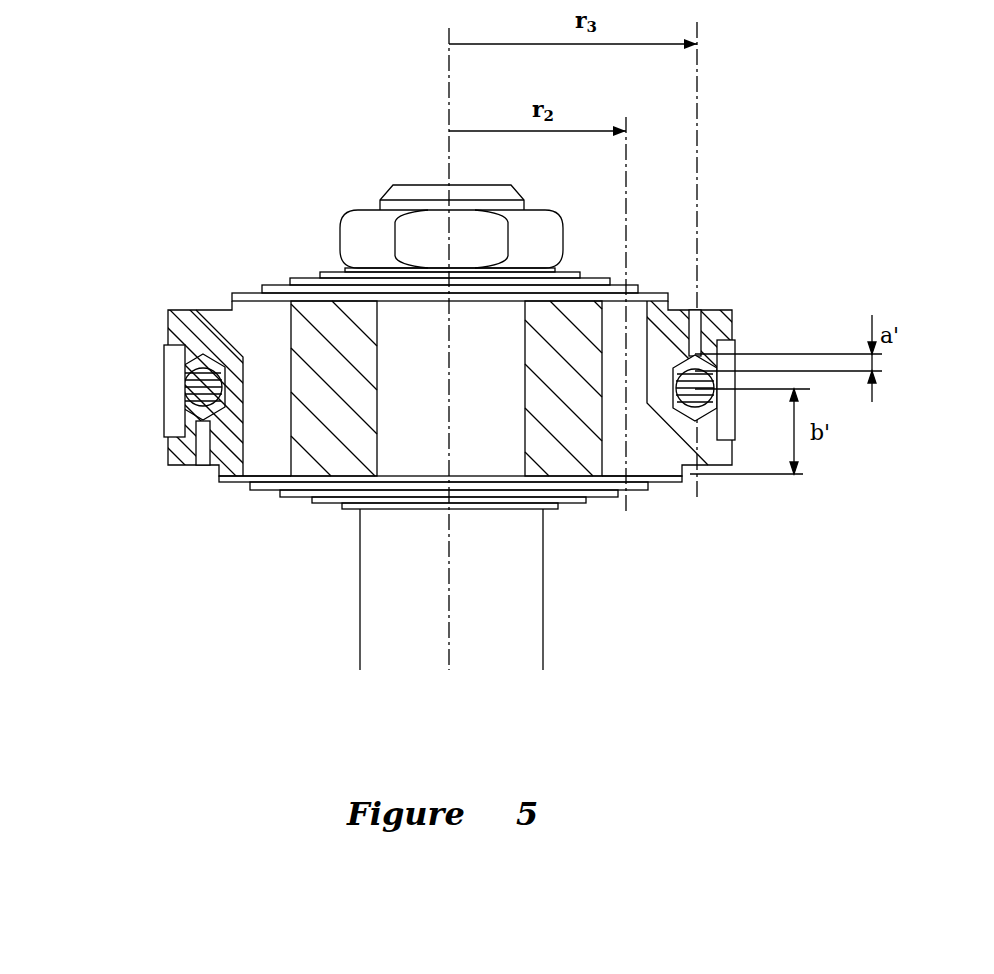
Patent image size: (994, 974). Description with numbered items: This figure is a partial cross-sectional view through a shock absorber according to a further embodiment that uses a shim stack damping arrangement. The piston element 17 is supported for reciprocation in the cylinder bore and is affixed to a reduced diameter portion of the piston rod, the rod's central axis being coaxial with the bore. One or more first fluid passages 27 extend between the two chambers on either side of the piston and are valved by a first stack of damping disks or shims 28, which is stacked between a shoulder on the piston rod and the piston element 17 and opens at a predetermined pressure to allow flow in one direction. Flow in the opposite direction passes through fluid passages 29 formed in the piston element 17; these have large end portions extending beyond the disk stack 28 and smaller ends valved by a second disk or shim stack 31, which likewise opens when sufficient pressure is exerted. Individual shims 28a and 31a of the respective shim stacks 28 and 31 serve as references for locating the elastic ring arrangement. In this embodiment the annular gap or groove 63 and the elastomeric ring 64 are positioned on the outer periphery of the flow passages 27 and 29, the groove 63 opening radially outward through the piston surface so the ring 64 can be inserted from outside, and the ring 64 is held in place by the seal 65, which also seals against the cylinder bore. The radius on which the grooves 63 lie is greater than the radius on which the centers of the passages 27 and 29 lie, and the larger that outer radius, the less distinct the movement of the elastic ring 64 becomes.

The piston element 17 is at (715, 325).
The first fluid passages 27 is at (238, 323).
The first stack of damping disks or shims 28 is at (301, 494).
The shims 28a is at (219, 488).
The fluid passages 29 is at (653, 458).
The disk or shim stack 31 is at (318, 278).
The shims 31a is at (240, 288).
The annular groove 63 is at (200, 365).
The elastic ring 64 is at (195, 405).
The seal 65 is at (175, 352).